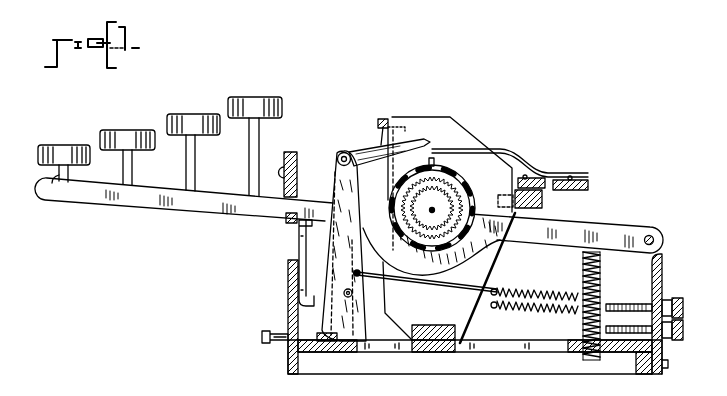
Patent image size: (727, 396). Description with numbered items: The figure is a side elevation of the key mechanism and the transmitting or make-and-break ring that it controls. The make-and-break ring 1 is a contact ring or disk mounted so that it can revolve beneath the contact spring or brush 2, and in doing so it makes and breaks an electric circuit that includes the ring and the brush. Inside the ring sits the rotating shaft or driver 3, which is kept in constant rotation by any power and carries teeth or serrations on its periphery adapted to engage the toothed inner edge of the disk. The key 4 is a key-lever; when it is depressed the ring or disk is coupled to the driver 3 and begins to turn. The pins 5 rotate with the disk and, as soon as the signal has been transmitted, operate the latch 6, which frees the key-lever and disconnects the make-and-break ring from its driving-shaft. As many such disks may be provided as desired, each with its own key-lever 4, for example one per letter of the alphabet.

The make-and-break ring 1 is at (467, 196).
The contact spring or brush 2 is at (490, 162).
The rotating shaft or driver 3 is at (432, 208).
The key 4 is at (557, 245).
The pins 5 is at (432, 160).
The latch 6 is at (409, 139).